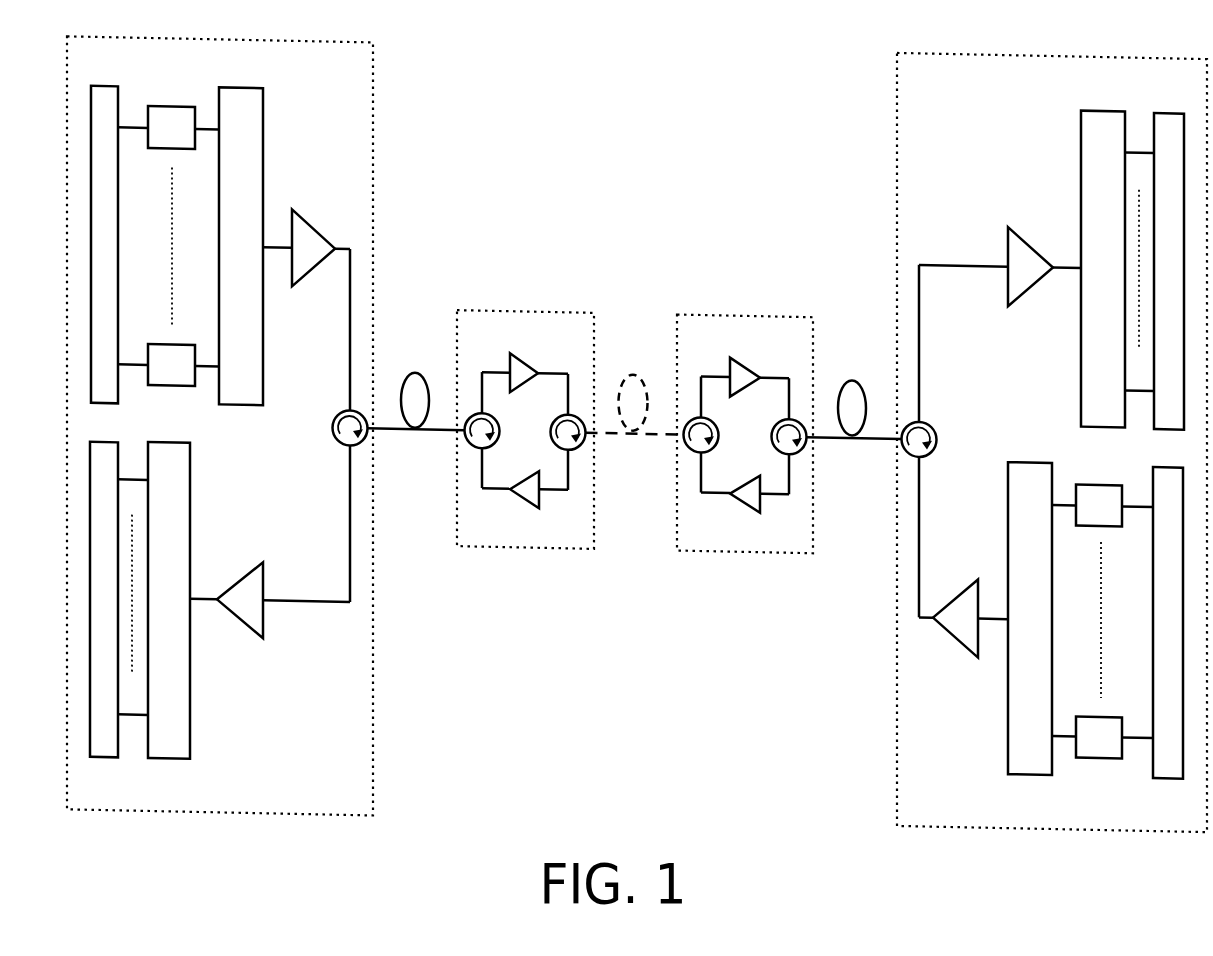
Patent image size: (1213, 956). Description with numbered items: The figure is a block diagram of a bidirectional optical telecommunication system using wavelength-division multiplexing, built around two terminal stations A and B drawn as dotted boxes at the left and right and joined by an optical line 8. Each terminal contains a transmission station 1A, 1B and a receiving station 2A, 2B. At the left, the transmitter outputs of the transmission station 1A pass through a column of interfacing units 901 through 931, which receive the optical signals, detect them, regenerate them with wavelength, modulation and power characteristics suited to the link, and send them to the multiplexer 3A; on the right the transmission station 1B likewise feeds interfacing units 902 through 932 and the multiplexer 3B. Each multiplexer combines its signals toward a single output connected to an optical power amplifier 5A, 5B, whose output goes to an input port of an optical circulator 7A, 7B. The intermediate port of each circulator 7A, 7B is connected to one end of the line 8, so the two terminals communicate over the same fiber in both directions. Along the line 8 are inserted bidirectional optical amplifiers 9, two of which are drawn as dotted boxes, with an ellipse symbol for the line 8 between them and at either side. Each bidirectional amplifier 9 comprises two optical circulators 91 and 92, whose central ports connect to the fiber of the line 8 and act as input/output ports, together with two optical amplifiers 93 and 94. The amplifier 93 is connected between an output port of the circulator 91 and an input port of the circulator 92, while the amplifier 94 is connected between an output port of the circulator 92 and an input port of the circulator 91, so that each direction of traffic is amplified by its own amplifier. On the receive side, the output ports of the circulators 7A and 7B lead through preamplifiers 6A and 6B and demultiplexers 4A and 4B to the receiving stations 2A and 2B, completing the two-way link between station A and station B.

The terminal station A is at (378, 117).
The terminal station B is at (890, 122).
The transmission station 1A is at (108, 78).
The receiving station 2A is at (98, 759).
The multiplexer 3A is at (244, 79).
The demultiplexer 4A is at (174, 757).
The optical power amplifier 5A is at (317, 216).
The preamplifier 6A is at (235, 622).
The optical circulator 7A is at (331, 427).
The interfacing unit 901 is at (172, 100).
The interfacing unit 931 is at (170, 384).
The optical line 8 is at (415, 362).
The bidirectional optical amplifier 9 is at (478, 300).
The optical circulator 91 is at (500, 428).
The optical circulator 92 is at (548, 418).
The optical amplifier 93 is at (527, 341).
The optical amplifier 94 is at (522, 497).
The transmission station 1B is at (1168, 758).
The receiving station 2B is at (1165, 85).
The multiplexer 3B is at (1028, 757).
The demultiplexer 4B is at (1105, 86).
The optical power amplifier 5B is at (952, 628).
The preamplifier 6B is at (1035, 217).
The optical circulator 7B is at (939, 411).
The interfacing unit 902 is at (1094, 463).
The interfacing unit 932 is at (1102, 740).